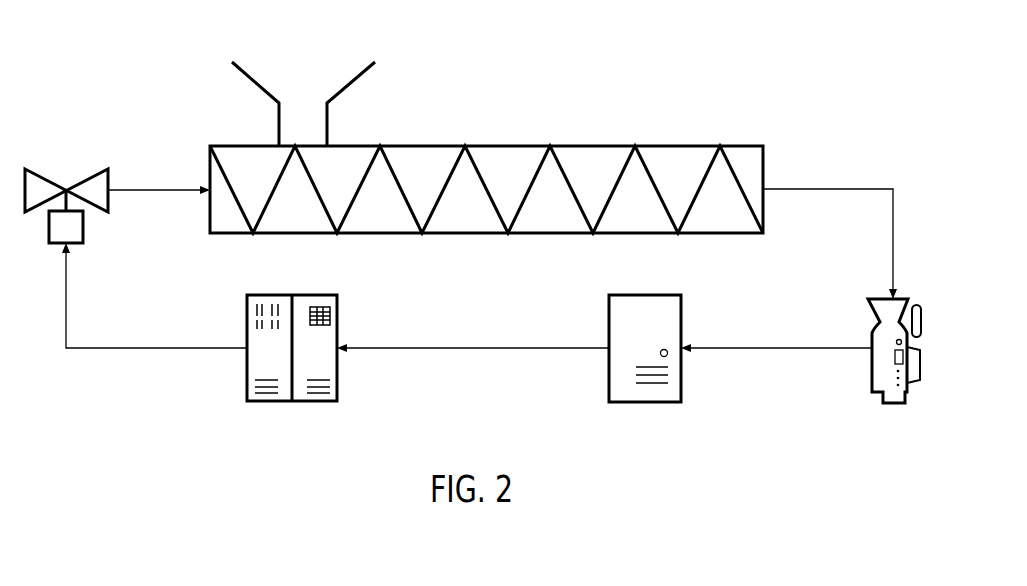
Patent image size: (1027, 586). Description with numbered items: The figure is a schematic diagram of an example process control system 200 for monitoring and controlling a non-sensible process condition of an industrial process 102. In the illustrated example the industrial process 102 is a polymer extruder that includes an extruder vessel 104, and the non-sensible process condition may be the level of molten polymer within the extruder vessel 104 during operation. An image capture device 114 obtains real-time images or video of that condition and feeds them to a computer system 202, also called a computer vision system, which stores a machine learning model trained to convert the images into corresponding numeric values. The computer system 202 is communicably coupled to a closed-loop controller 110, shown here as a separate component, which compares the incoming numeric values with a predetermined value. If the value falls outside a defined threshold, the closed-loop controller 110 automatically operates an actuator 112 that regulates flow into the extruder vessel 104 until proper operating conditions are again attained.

The process control system 200 is at (100, 24).
The industrial process 102 is at (512, 140).
The extruder vessel 104 is at (672, 146).
The closed-loop controller 110 is at (337, 388).
The actuator 112 is at (84, 237).
The image capture device 114 is at (872, 388).
The computer system 202 is at (681, 386).